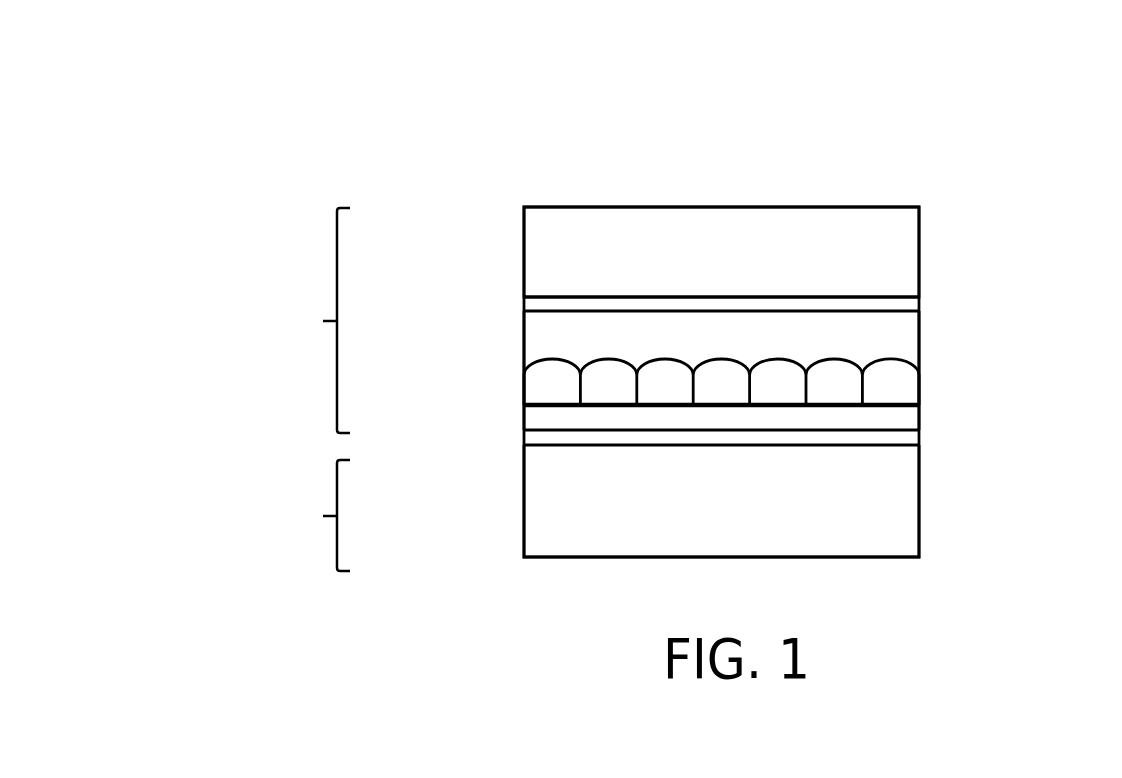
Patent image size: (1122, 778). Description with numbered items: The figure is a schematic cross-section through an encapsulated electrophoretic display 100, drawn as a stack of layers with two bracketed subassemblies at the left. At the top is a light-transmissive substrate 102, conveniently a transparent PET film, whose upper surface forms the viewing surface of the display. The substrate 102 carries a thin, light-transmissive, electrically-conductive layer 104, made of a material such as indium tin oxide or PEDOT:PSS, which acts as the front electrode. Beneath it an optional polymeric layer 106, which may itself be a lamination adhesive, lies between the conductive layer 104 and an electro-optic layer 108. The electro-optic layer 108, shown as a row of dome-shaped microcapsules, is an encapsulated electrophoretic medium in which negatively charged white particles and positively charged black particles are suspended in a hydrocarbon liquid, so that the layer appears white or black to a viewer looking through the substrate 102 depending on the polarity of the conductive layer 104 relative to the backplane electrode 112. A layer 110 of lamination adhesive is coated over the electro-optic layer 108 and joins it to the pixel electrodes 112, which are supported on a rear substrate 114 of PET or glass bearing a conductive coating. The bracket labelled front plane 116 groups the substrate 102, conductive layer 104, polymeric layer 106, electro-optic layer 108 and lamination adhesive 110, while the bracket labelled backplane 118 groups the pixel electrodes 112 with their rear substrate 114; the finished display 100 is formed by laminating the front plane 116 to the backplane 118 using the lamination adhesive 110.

The encapsulated electrophoretic display 100 is at (977, 147).
The light-transmissive substrate 102 is at (919, 255).
The light-transmissive electrically-conductive layer 104 is at (524, 300).
The polymeric layer 106 is at (919, 345).
The electro-optic layer 108 is at (537, 386).
The lamination adhesive layer 110 is at (919, 418).
The pixel electrodes 112 is at (529, 439).
The rear substrate 114 is at (919, 528).
The front plane 116 is at (296, 320).
The backplane 118 is at (296, 515).